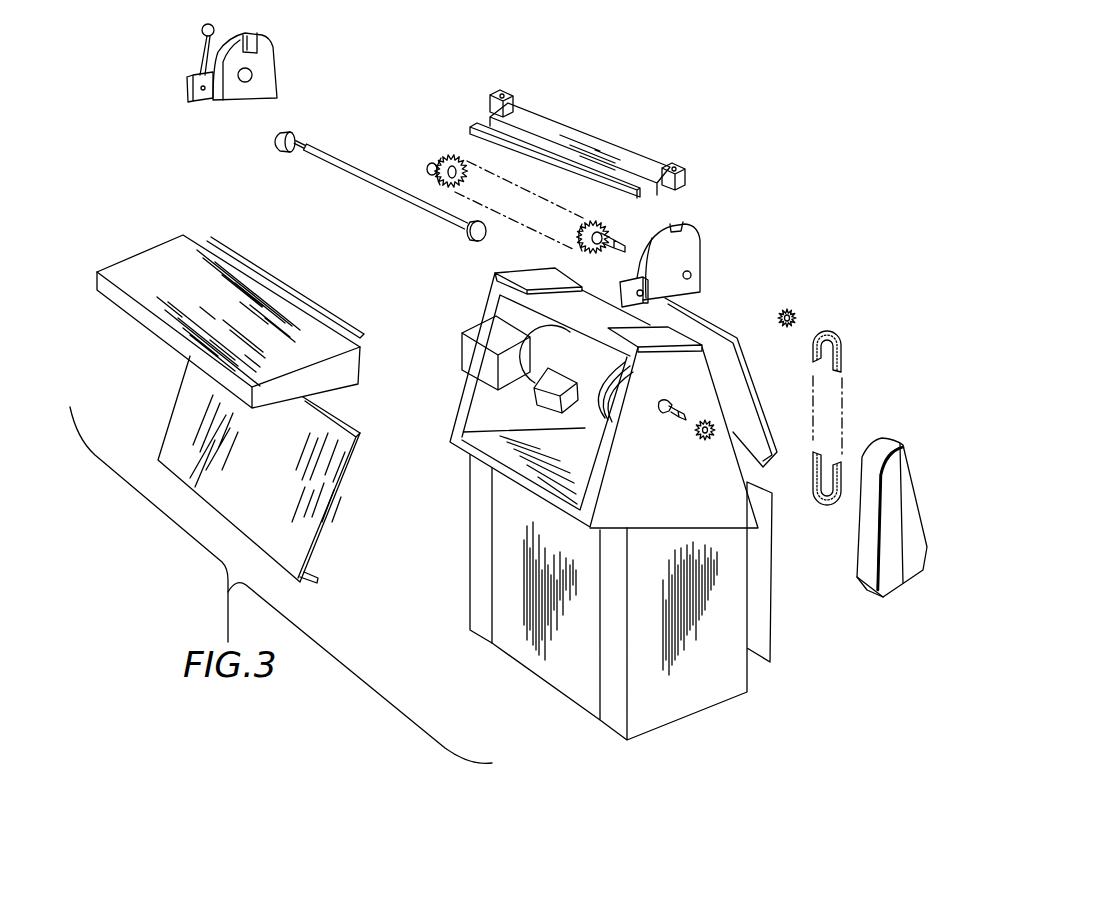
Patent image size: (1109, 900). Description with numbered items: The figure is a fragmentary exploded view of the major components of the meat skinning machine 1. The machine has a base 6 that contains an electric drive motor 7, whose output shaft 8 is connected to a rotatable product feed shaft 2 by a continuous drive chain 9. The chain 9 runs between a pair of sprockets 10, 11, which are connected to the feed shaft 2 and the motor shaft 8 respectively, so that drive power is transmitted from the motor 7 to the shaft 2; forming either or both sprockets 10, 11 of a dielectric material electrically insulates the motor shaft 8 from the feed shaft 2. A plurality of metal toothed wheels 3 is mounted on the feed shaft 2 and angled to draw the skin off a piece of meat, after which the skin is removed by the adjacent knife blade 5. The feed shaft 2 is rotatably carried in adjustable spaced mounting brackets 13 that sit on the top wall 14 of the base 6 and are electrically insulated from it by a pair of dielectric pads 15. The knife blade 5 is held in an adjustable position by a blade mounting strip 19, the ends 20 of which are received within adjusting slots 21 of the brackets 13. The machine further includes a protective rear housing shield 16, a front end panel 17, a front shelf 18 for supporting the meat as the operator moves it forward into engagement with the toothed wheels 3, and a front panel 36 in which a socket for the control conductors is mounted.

The meat skinning machine 1 is at (796, 245).
The product feed shaft 2 is at (437, 160).
The metal toothed wheels 3 is at (427, 171).
The knife blade 5 is at (577, 167).
The base 6 is at (583, 650).
The electric drive motor 7 is at (556, 353).
The output shaft 8 is at (665, 418).
The continuous drive chain 9 is at (842, 355).
The sprocket 10 is at (784, 314).
The sprocket 11 is at (708, 445).
The mounting brackets 13 is at (263, 73).
The top wall 14 is at (592, 315).
The dielectric pads 15 is at (528, 277).
The protective rear housing shield 16 is at (731, 386).
The front end panel 17 is at (300, 537).
The front shelf 18 is at (153, 283).
The blade mounting strip 19 is at (538, 120).
The ends of blade mounting strip 20 is at (492, 103).
The adjusting slots 21 is at (257, 38).
The front panel 36 is at (507, 534).